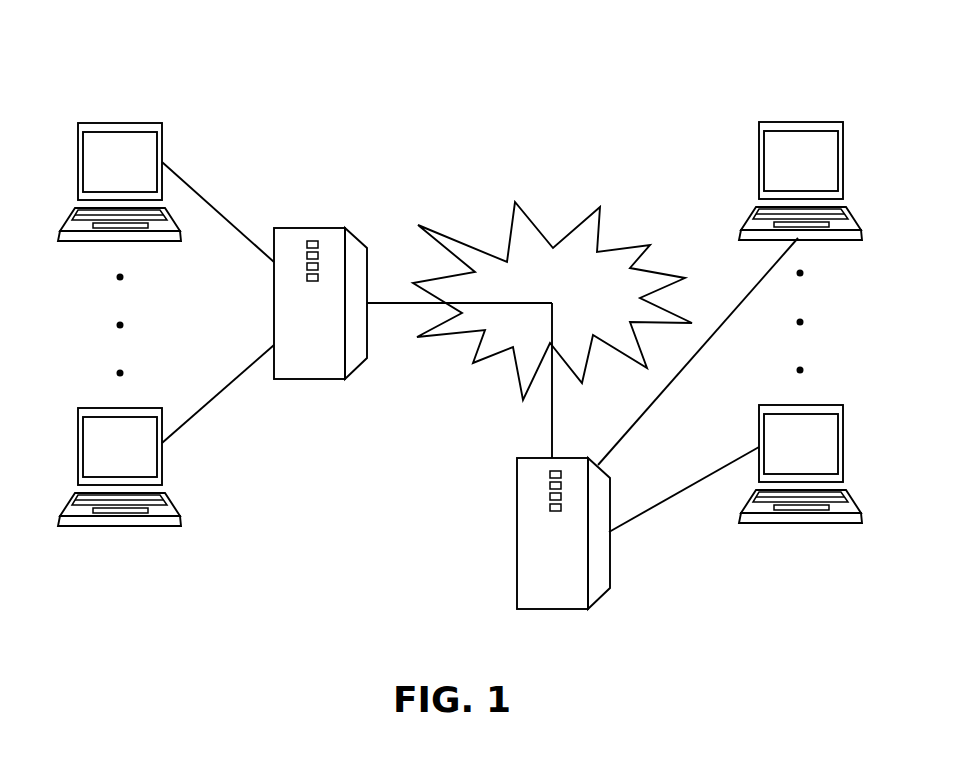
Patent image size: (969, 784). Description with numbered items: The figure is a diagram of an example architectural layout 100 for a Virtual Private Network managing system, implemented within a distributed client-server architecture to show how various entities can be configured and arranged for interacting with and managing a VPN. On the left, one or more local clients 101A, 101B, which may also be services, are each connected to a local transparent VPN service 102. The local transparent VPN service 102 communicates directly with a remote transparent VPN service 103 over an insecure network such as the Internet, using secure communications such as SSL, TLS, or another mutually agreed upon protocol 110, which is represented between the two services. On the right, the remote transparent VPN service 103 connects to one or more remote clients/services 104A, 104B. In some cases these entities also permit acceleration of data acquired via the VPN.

The architectural layout 100 is at (686, 60).
The local client 101A is at (78, 162).
The local client 101B is at (78, 447).
The local transparent VPN service 102 is at (274, 303).
The remote transparent VPN service 103 is at (517, 532).
The remote client/service 104A is at (759, 160).
The remote client/service 104B is at (808, 402).
The mutually agreed upon protocol 110 is at (537, 222).